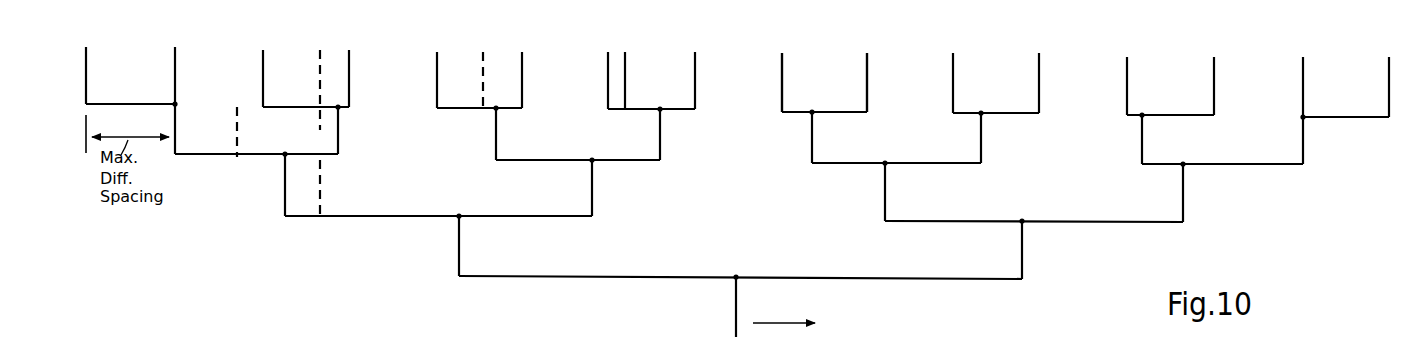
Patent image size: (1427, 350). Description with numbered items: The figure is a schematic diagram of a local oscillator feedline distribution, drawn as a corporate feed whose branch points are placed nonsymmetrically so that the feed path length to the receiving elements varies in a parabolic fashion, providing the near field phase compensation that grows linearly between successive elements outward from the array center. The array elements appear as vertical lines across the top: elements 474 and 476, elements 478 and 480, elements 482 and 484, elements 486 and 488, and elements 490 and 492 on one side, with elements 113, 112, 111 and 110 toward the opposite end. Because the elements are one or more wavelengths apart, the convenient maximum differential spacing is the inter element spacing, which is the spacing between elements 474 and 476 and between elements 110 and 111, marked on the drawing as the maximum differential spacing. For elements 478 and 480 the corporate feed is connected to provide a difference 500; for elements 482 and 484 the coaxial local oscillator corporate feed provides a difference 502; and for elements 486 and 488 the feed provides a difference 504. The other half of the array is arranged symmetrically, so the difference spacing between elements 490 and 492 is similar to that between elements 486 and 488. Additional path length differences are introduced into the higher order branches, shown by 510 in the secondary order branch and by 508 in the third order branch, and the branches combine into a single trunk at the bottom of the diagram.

The element 474 is at (86, 52).
The element 476 is at (175, 55).
The element 478 is at (263, 55).
The element 480 is at (349, 57).
The element 482 is at (437, 57).
The element 484 is at (522, 62).
The element 486 is at (608, 70).
The element 488 is at (695, 63).
The element 490 is at (782, 62).
The element 492 is at (867, 62).
The element 113 is at (1127, 73).
The element 112 is at (1214, 73).
The element 111 is at (1303, 73).
The element 110 is at (1389, 73).
The difference 500 is at (292, 107).
The difference 502 is at (458, 108).
The difference 504 is at (617, 109).
The path length difference in third order branch 508 is at (300, 216).
The path length difference in secondary order branch 510 is at (198, 155).